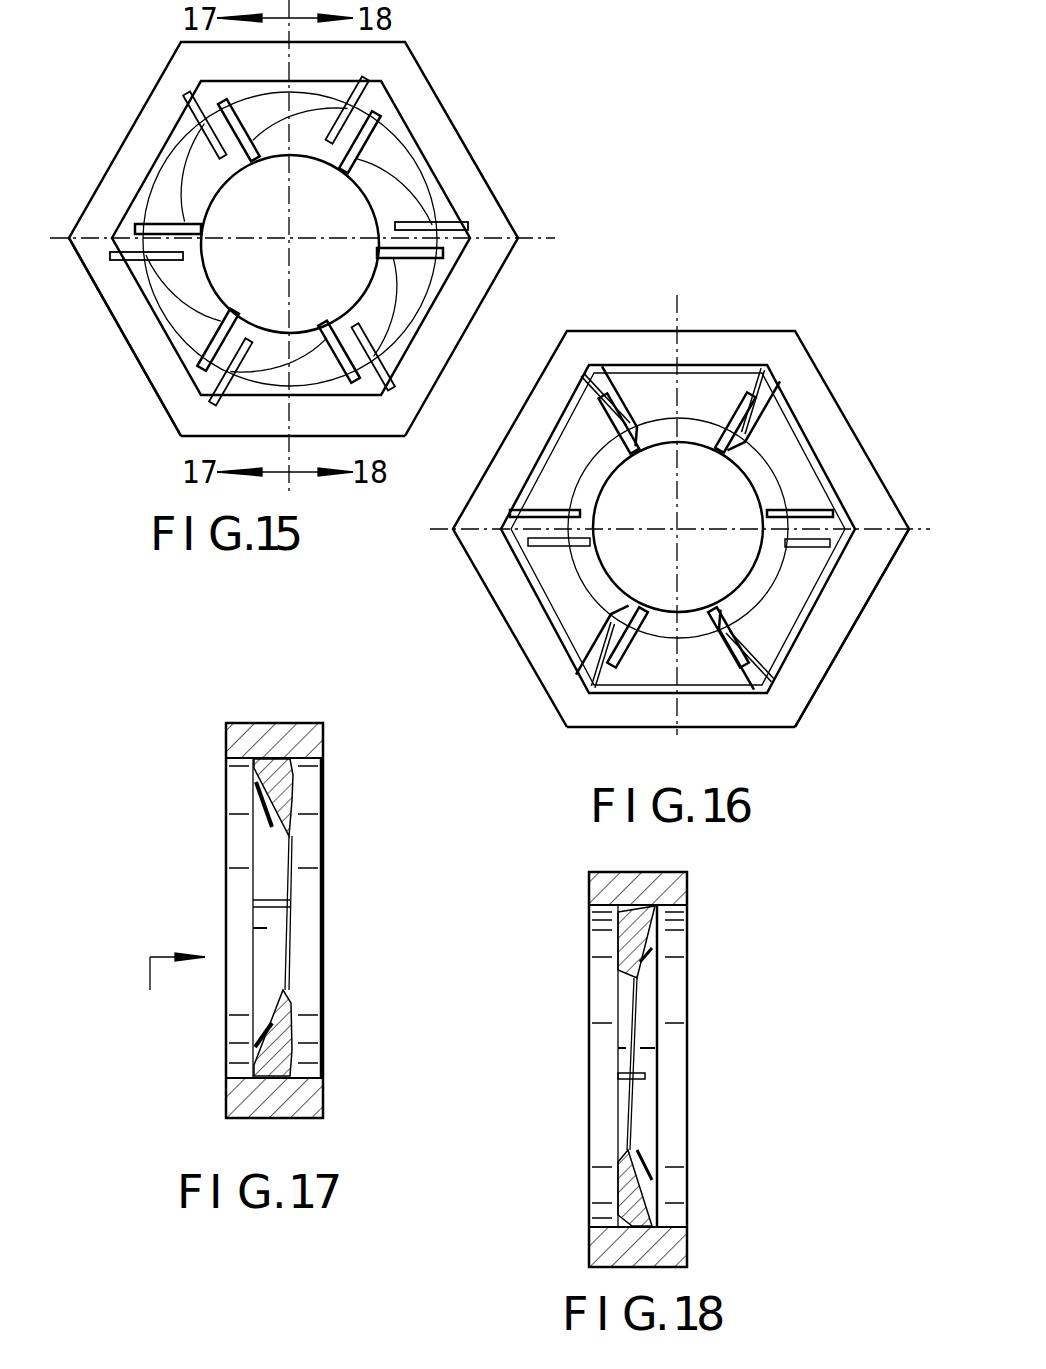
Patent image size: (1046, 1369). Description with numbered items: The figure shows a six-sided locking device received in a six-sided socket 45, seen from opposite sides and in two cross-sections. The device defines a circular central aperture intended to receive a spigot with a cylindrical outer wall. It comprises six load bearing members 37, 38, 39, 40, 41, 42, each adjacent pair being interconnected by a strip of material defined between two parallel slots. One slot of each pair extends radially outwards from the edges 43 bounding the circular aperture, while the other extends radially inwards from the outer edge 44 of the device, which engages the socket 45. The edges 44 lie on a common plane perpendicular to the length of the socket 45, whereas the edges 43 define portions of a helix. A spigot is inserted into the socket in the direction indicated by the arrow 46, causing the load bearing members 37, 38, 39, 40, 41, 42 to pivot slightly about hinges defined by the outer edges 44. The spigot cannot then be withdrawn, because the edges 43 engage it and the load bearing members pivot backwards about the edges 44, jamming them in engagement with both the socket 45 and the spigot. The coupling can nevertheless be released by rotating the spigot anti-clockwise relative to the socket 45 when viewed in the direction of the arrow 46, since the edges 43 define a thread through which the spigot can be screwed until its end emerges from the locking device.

In FIG. 15, the load bearing member 37 is at (257, 115).
In FIG. 16, the load bearing member 37 is at (700, 362).
In FIG. 15, the load bearing member 38 is at (170, 162).
In FIG. 16, the load bearing member 38 is at (810, 432).
In FIG. 15, the load bearing member 39 is at (127, 364).
In FIG. 16, the load bearing member 39 is at (800, 650).
In FIG. 15, the load bearing member 40 is at (385, 418).
In FIG. 16, the load bearing member 40 is at (680, 700).
In FIG. 15, the load bearing member 41 is at (415, 305).
In FIG. 16, the load bearing member 41 is at (530, 592).
In FIG. 15, the load bearing member 42 is at (415, 160).
In FIG. 16, the load bearing member 42 is at (575, 400).
In FIG. 15, the edges 43 is at (185, 268).
In FIG. 16, the edges 43 is at (600, 660).
In FIG. 17, the edges 43 is at (292, 836).
In FIG. 18, the edges 43 is at (640, 1017).
In FIG. 15, the outer edge 44 is at (138, 193).
In FIG. 16, the outer edge 44 is at (645, 352).
In FIG. 17, the outer edge 44 is at (246, 760).
In FIG. 18, the outer edge 44 is at (655, 910).
In FIG. 15, the socket 45 is at (150, 96).
In FIG. 16, the socket 45 is at (681, 529).
In FIG. 17, the socket 45 is at (237, 722).
In FIG. 18, the socket 45 is at (662, 895).
In FIG. 17, the arrow 46 is at (155, 986).